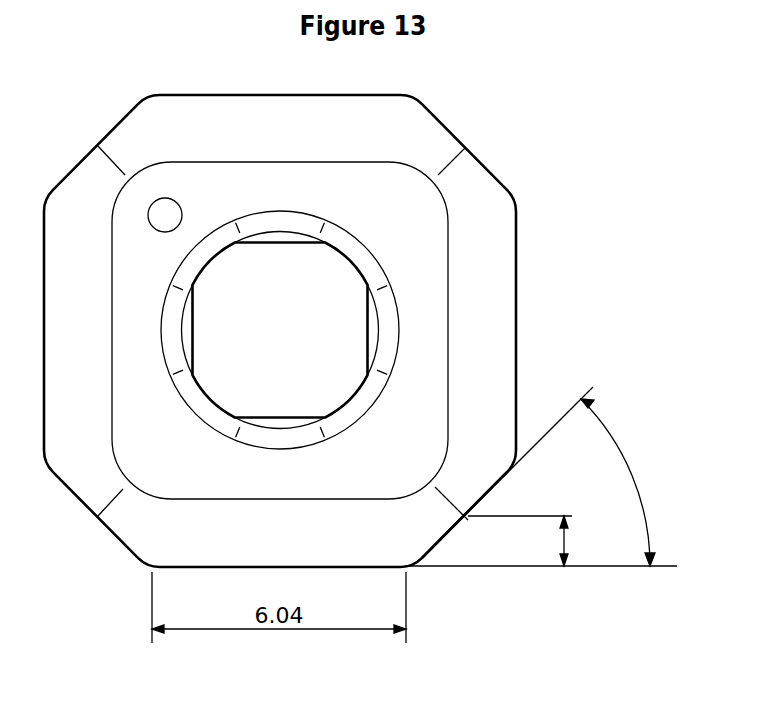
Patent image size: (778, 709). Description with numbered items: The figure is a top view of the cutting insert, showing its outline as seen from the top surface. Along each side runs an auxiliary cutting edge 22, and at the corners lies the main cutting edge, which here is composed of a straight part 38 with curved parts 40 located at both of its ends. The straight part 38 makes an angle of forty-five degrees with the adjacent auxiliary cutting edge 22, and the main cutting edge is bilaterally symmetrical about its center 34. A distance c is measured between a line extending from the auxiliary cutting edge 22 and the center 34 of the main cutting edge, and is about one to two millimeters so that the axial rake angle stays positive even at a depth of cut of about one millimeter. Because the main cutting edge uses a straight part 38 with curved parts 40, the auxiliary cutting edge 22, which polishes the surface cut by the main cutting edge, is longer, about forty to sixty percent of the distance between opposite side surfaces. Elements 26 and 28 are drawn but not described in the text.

The auxiliary cutting edge 22 is at (517, 338).
The central recess 26 is at (425, 215).
The rim surface 28 is at (492, 248).
The center of the main cutting edge 34 is at (468, 517).
The straight part 38 is at (442, 538).
The curved parts 40 is at (510, 470).